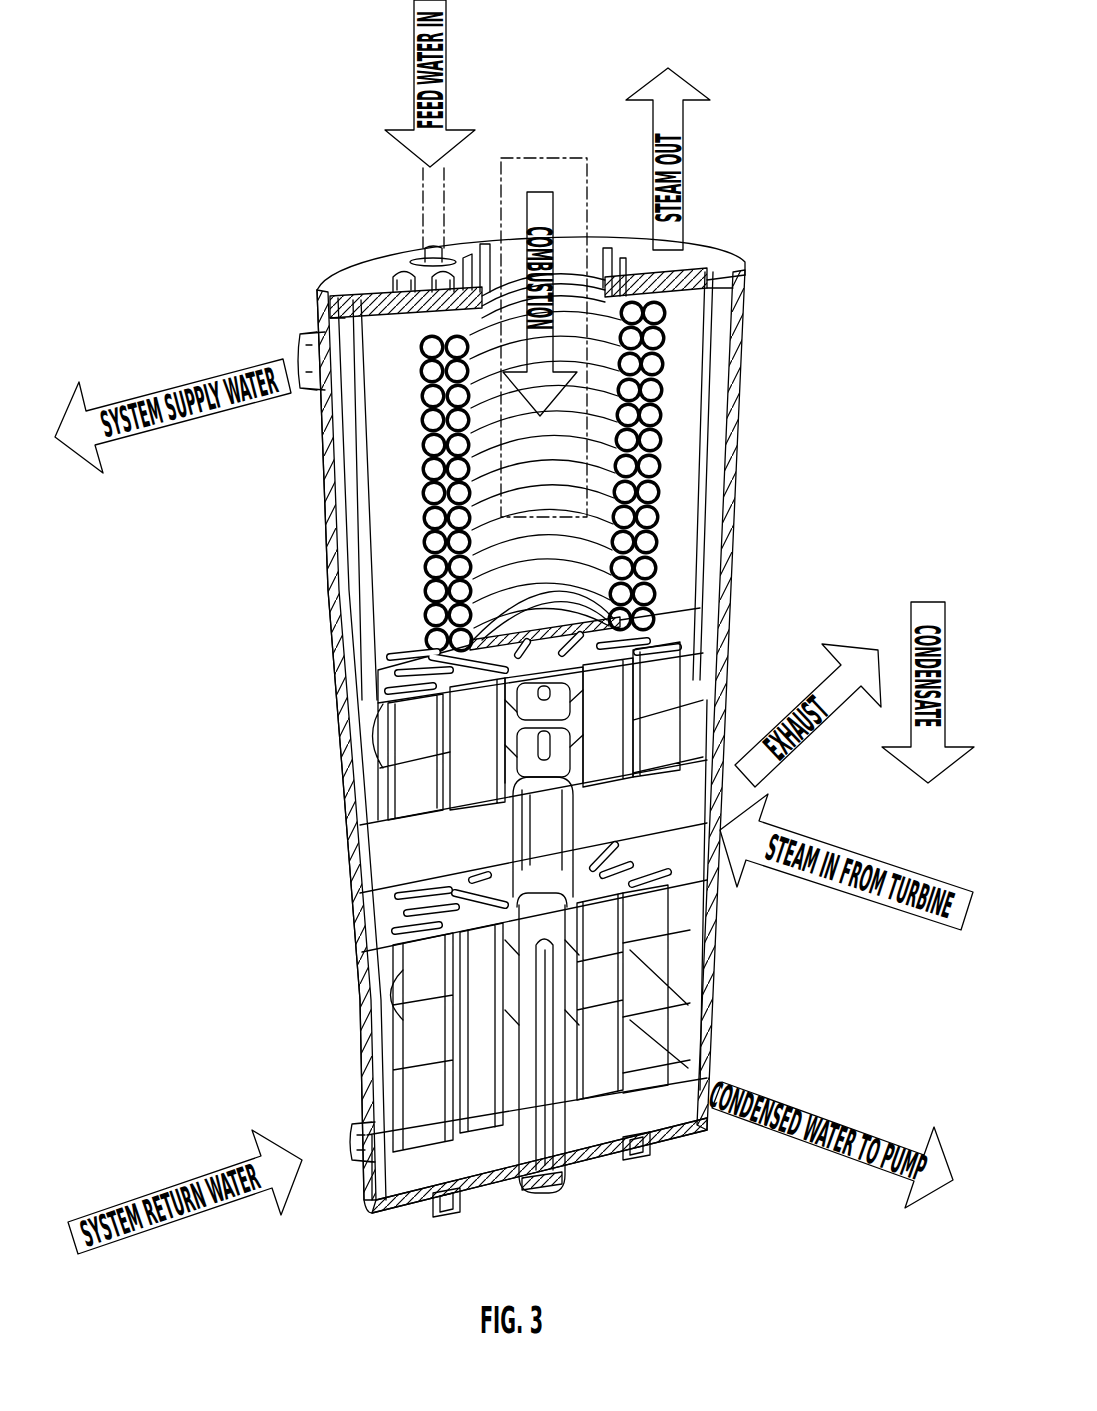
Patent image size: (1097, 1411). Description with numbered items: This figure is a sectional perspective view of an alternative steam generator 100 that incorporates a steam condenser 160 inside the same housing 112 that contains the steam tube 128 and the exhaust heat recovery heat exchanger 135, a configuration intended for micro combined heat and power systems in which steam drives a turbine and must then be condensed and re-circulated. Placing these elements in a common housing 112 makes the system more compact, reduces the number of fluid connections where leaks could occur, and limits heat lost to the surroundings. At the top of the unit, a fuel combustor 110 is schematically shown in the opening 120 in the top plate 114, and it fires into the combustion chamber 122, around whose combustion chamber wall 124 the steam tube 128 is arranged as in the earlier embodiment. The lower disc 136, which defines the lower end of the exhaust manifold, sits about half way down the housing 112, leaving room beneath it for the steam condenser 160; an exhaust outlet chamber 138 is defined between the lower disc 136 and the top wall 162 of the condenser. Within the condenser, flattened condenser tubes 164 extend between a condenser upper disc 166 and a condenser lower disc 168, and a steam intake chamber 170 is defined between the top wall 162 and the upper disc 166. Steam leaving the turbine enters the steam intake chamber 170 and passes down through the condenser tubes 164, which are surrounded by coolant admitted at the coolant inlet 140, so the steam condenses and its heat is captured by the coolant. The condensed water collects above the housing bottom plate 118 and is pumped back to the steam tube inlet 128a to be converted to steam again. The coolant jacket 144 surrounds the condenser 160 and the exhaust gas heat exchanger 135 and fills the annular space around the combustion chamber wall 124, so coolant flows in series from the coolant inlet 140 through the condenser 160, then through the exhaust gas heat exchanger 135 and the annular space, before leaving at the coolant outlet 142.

The steam generator 100 is at (793, 338).
The fuel combustor 110 is at (543, 157).
The housing 112 is at (303, 283).
The top plate 114 is at (690, 258).
The housing bottom plate 118 is at (402, 1215).
The opening 120 is at (598, 283).
The combustion chamber 122 is at (680, 420).
The combustion chamber wall 124 is at (365, 452).
The steam tube 128 is at (670, 362).
The steam tube inlet 128a is at (423, 192).
The exhaust heat recovery heat exchanger 135 is at (372, 732).
The lower disc 136 is at (366, 805).
The exhaust outlet chamber 138 is at (373, 857).
The coolant inlet 140 is at (348, 1135).
The coolant outlet 142 is at (290, 345).
The coolant jacket 144 is at (355, 536).
The steam condenser 160 is at (700, 925).
The top wall 162 is at (365, 892).
The flattened condenser tubes 164 is at (410, 993).
The condenser upper disc 166 is at (378, 958).
The condenser lower disc 168 is at (680, 1065).
The steam intake chamber 170 is at (377, 922).